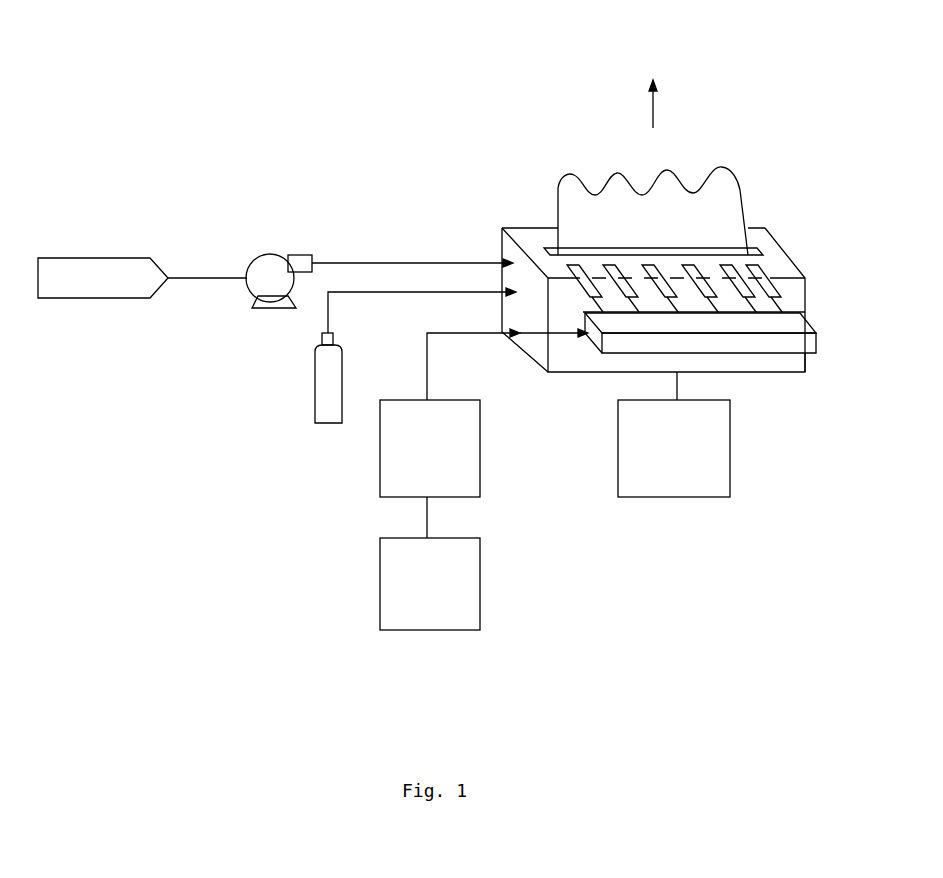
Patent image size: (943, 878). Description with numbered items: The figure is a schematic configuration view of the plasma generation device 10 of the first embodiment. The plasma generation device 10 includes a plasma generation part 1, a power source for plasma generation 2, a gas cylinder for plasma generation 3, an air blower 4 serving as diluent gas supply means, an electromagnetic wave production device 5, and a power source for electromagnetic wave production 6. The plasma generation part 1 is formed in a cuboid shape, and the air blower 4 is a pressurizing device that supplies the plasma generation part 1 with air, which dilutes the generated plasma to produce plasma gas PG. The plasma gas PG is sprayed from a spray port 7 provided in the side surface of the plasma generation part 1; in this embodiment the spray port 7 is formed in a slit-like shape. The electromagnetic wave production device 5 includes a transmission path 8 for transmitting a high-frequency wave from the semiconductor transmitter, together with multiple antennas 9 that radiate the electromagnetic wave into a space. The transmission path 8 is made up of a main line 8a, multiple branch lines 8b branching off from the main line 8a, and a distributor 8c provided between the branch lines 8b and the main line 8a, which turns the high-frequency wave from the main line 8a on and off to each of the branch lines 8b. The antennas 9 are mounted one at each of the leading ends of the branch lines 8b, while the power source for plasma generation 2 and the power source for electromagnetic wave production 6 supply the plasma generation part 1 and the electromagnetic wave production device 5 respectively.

The plasma generation device 10 is at (248, 53).
The plasma generation part 1 is at (782, 152).
The plasma gas PG is at (558, 210).
The spray port 7 is at (690, 253).
The antennas 9 is at (760, 268).
The transmission path 8 is at (664, 341).
The main line 8a is at (475, 340).
The branch lines 8b is at (777, 300).
The distributor 8c is at (772, 343).
The power source for plasma generation 2 is at (731, 455).
The electromagnetic wave production device 5 is at (481, 450).
The power source for electromagnetic wave production 6 is at (481, 587).
The air blower 4 is at (263, 257).
The gas cylinder for plasma generation 3 is at (313, 403).